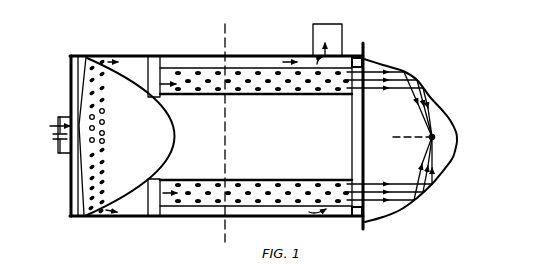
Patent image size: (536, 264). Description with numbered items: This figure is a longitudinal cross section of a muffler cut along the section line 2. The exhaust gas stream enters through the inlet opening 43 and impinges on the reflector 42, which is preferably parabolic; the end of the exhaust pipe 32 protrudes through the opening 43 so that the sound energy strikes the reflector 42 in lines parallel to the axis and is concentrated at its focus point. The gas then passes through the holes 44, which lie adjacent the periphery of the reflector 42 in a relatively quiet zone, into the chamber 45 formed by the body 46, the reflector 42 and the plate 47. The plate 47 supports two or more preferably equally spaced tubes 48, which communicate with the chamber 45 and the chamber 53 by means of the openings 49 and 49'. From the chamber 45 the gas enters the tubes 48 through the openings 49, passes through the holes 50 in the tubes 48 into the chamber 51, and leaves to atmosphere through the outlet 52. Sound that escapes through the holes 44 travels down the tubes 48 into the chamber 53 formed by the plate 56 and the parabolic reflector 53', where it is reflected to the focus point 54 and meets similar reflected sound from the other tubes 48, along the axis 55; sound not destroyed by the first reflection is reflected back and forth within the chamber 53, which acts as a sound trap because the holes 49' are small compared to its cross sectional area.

The section line 2- 2 is at (222, 136).
The lamp 32 is at (78, 88).
The reflector 42 is at (169, 117).
The exhaust gas stream inlet opening 43 is at (58, 150).
The holes 44 is at (103, 62).
The chamber 45 is at (128, 62).
The body 46 is at (238, 56).
The plate 47 is at (172, 153).
The tubes 48 is at (272, 95).
The openings 49 is at (176, 54).
The openings 49' is at (389, 129).
The holes 50 is at (333, 189).
The chamber 51 is at (273, 63).
The outlet 52 is at (344, 46).
The chamber 53 is at (424, 140).
The reflector 53' is at (423, 119).
The focus point 54 is at (436, 137).
The optical axis 55 is at (409, 149).
The plate 56 is at (352, 133).